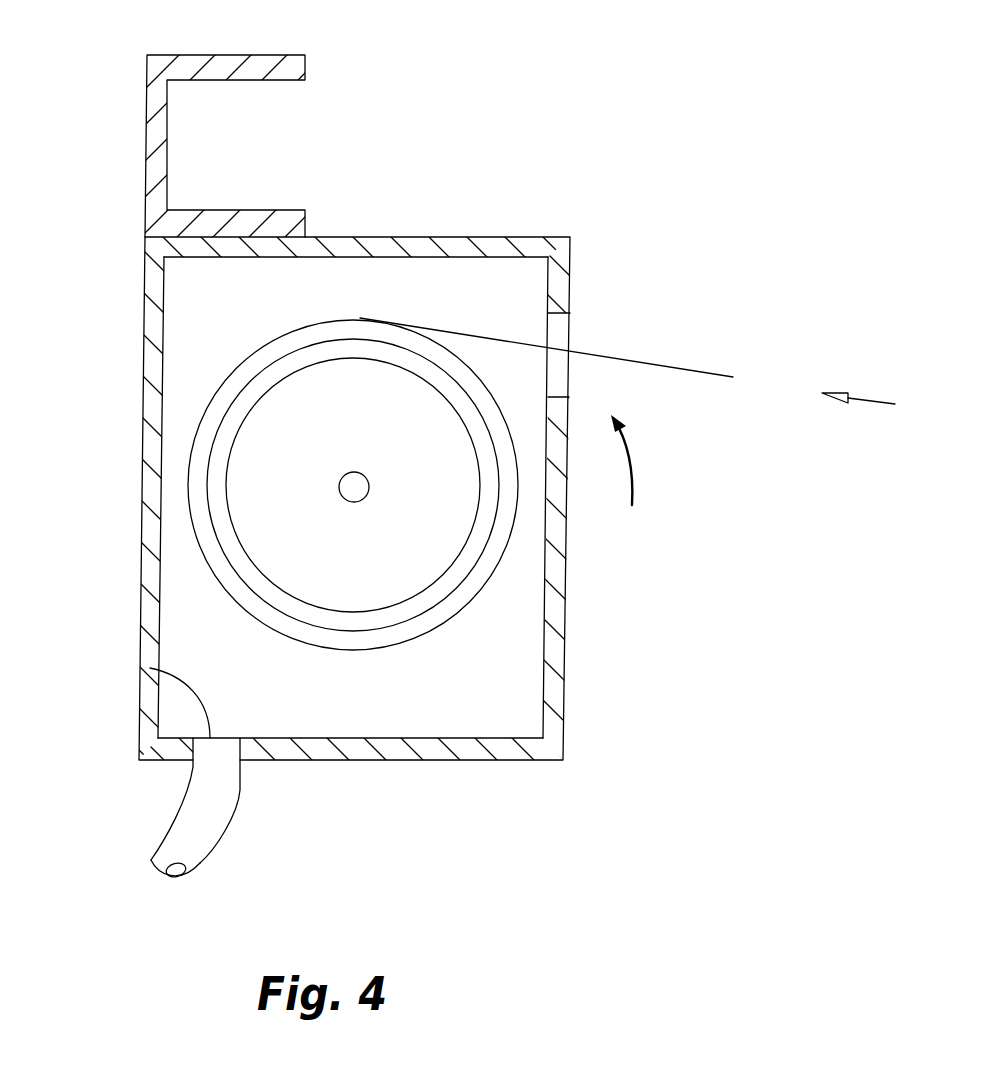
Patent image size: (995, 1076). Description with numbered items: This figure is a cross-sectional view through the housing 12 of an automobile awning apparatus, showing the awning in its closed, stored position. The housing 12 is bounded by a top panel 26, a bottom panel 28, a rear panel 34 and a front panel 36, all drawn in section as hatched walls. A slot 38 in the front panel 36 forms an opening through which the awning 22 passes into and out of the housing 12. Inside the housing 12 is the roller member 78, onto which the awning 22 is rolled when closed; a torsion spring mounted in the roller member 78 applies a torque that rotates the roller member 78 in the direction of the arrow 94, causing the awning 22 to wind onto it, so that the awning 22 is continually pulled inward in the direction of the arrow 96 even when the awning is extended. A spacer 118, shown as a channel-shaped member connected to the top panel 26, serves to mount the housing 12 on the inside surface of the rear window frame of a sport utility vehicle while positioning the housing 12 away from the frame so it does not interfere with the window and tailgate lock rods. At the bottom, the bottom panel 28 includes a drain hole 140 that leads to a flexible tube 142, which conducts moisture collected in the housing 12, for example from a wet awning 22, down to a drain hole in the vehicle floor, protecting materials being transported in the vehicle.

The housing 12 is at (563, 662).
The awning 22 is at (713, 372).
The top panel 26 is at (500, 239).
The bottom panel 28 is at (475, 760).
The rear panel 34 is at (142, 440).
The front panel 36 is at (570, 263).
The slot 38 is at (560, 328).
The roller member 78 is at (467, 553).
The arrow 94 is at (635, 473).
The arrow 96 is at (870, 405).
The spacer 118 is at (305, 70).
The drain hole 140 is at (150, 668).
The flexible tube 142 is at (210, 812).